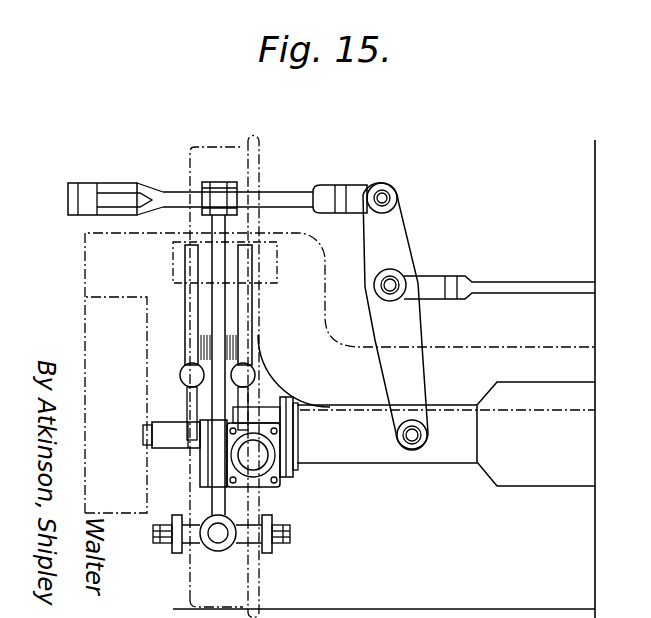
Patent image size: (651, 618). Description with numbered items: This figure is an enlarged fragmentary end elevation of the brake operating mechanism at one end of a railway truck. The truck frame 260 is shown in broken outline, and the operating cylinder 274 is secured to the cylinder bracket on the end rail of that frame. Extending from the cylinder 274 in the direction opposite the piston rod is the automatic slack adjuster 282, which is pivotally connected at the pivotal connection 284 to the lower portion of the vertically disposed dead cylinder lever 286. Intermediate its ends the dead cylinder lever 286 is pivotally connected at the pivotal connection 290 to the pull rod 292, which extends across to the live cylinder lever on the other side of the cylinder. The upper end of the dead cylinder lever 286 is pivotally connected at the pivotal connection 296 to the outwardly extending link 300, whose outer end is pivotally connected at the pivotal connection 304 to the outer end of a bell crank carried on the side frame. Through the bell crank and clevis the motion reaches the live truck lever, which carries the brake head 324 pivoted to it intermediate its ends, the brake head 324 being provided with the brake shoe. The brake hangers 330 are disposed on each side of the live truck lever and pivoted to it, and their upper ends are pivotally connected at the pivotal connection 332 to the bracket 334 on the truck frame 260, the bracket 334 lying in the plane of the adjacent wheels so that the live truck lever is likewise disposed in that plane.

The truck frame 260 is at (93, 278).
The cylinder 274 is at (530, 487).
The automatic slack adjuster 282 is at (378, 456).
The pivotal connection 284 is at (412, 435).
The dead cylinder lever 286 is at (418, 334).
The pivotal connection 290 is at (391, 285).
The pull rod 292 is at (497, 283).
The pivotal connection 296 is at (383, 199).
The link 300 is at (285, 193).
The pivotal connection 304 is at (90, 185).
The brake head 324 is at (202, 398).
The brake hangers 330 is at (192, 327).
The pivotal connection 332 is at (218, 305).
The bracket 334 is at (173, 258).